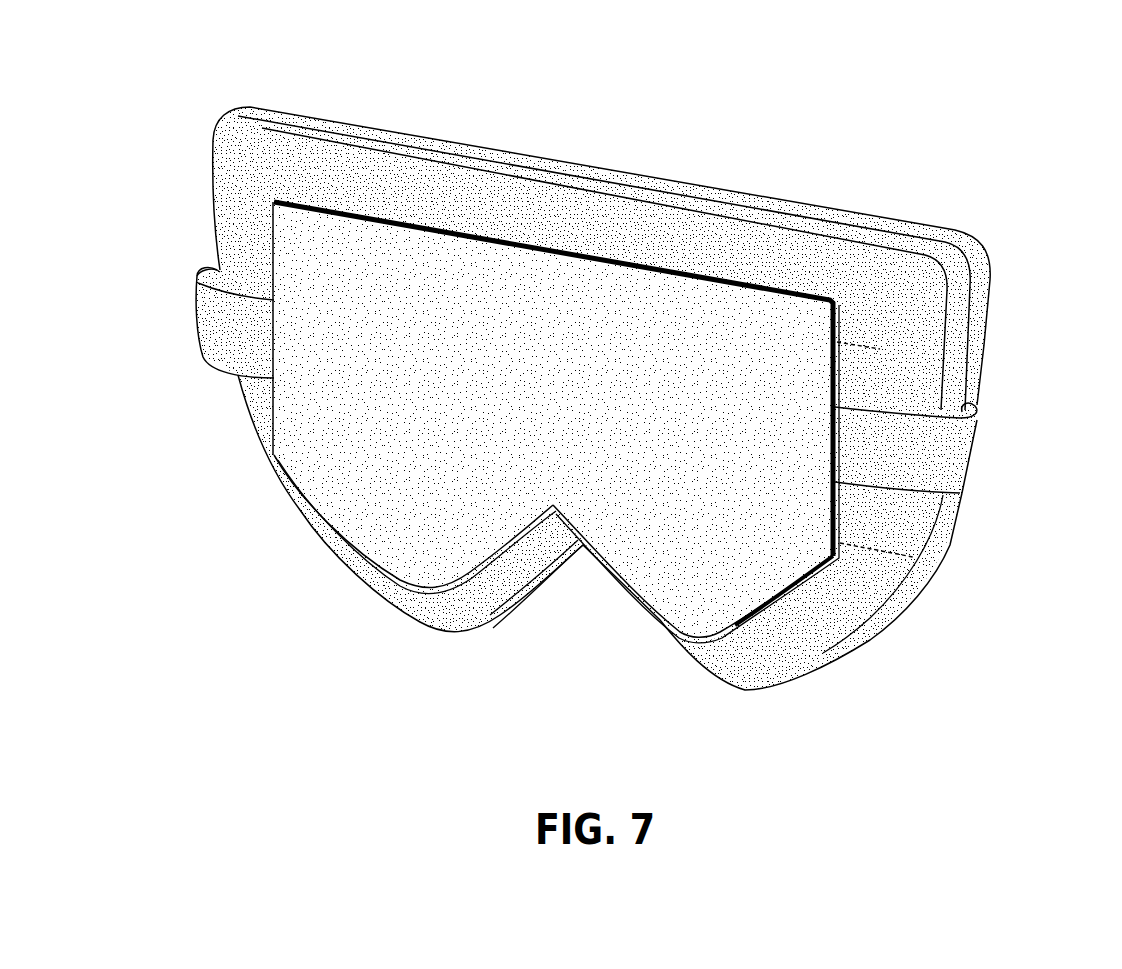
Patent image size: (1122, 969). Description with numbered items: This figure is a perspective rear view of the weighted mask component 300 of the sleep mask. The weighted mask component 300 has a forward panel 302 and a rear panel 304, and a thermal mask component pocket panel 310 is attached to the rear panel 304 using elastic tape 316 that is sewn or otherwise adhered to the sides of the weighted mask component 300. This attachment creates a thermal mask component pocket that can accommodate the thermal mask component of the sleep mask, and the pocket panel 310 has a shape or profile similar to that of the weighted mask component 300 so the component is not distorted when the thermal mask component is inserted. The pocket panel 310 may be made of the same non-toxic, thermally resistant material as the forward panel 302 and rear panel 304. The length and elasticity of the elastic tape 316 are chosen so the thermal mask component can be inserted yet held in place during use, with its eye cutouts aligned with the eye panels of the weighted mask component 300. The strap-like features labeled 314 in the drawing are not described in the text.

The weighted mask component 300 is at (1066, 217).
The forward panel 302 is at (353, 118).
The rear panel 304 is at (250, 178).
The thermal mask component pocket panel 310 is at (522, 420).
The strap 314 is at (197, 318).
The elastic tape 316 is at (863, 343).